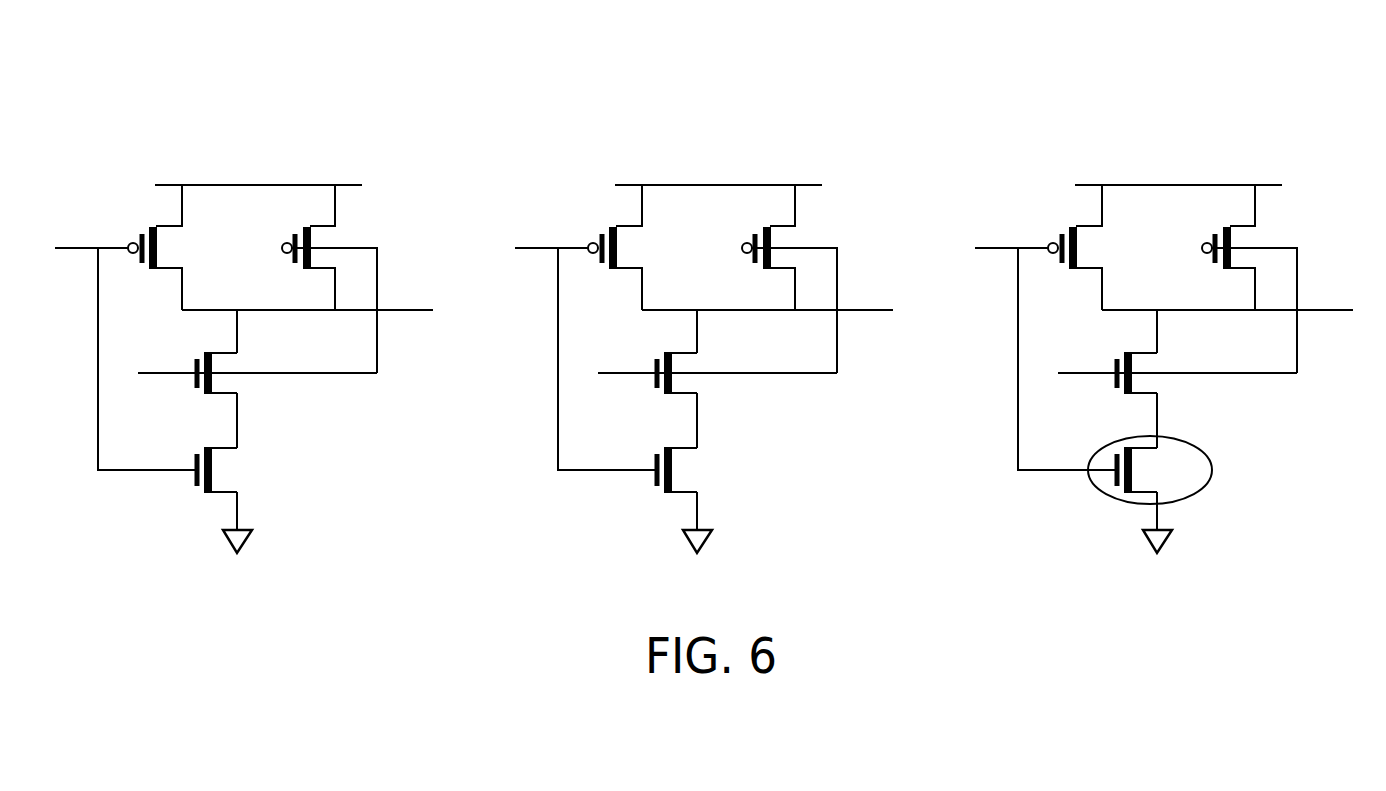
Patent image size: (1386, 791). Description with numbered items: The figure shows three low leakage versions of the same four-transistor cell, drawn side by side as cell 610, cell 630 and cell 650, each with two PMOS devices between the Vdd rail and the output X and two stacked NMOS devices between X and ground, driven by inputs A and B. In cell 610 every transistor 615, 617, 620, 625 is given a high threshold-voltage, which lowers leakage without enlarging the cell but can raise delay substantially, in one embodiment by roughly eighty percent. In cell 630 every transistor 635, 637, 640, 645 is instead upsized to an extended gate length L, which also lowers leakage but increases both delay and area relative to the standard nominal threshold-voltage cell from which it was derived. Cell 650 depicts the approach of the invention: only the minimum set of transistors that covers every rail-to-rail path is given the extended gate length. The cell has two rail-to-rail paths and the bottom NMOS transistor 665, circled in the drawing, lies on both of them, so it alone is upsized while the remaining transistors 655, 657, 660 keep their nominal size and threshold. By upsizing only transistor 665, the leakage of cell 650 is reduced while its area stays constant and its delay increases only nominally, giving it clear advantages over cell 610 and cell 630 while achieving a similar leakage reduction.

The cell 610 is at (125, 112).
The transistor 615 is at (145, 232).
The transistor 617 is at (193, 381).
The transistor 620 is at (357, 218).
The transistor 625 is at (195, 485).
The cell 630 is at (706, 319).
The transistor 635 is at (625, 247).
The transistor 637 is at (679, 383).
The transistor 640 is at (820, 243).
The transistor 645 is at (670, 479).
The cell 650 is at (1166, 319).
The transistor 655 is at (1073, 247).
The transistor 657 is at (1127, 383).
The transistor 660 is at (1280, 243).
The transistor 665 is at (1175, 474).